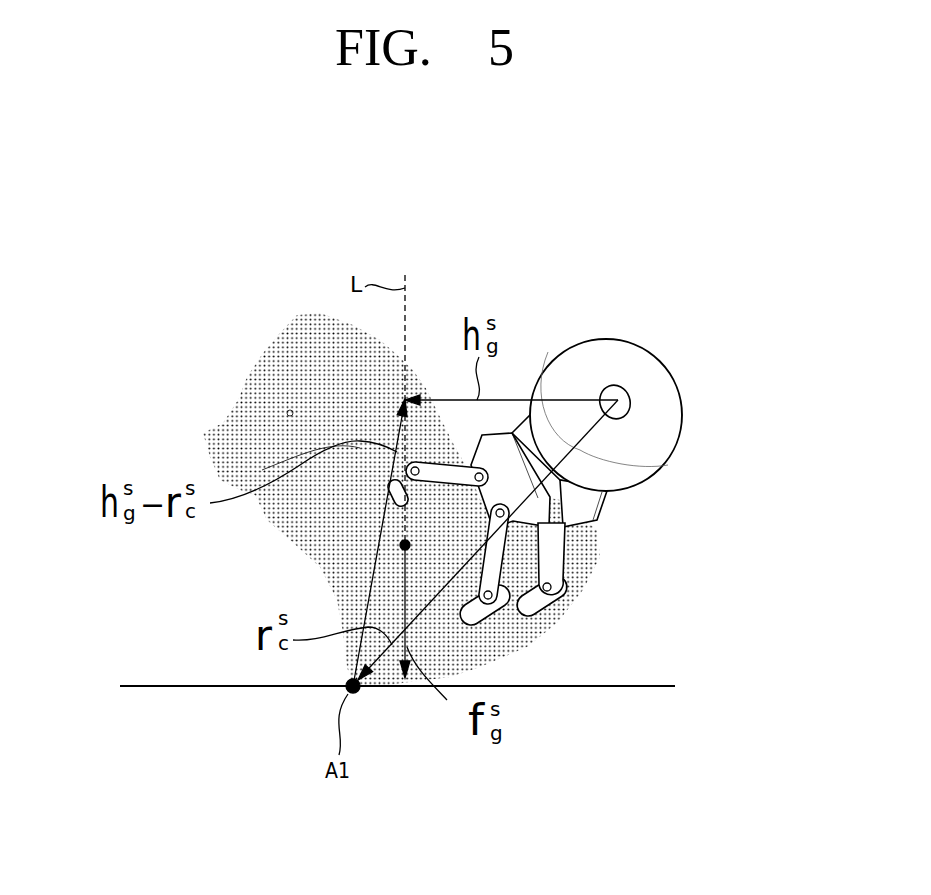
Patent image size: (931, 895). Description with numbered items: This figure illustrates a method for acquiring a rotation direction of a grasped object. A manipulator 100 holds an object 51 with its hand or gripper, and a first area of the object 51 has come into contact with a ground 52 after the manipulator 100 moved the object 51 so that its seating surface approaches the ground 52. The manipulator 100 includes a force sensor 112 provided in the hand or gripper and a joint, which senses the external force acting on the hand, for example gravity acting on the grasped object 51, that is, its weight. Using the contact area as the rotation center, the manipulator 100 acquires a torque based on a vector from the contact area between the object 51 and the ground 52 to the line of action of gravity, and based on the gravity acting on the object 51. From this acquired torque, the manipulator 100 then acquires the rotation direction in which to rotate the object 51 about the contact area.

The object 51 is at (267, 360).
The ground 52 is at (140, 686).
The manipulator 100 is at (577, 463).
The force sensor 112 is at (610, 393).